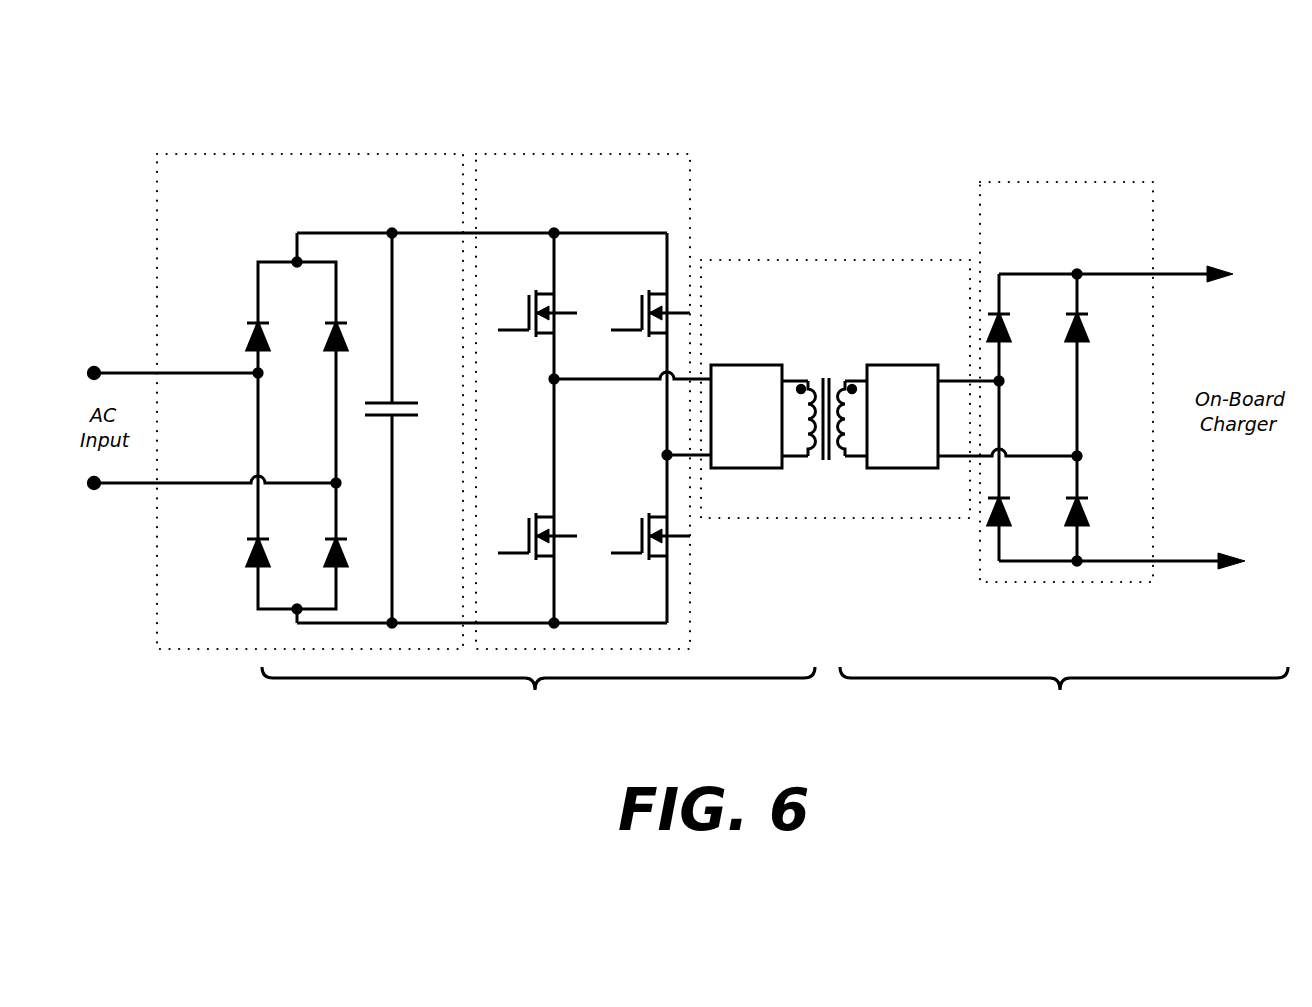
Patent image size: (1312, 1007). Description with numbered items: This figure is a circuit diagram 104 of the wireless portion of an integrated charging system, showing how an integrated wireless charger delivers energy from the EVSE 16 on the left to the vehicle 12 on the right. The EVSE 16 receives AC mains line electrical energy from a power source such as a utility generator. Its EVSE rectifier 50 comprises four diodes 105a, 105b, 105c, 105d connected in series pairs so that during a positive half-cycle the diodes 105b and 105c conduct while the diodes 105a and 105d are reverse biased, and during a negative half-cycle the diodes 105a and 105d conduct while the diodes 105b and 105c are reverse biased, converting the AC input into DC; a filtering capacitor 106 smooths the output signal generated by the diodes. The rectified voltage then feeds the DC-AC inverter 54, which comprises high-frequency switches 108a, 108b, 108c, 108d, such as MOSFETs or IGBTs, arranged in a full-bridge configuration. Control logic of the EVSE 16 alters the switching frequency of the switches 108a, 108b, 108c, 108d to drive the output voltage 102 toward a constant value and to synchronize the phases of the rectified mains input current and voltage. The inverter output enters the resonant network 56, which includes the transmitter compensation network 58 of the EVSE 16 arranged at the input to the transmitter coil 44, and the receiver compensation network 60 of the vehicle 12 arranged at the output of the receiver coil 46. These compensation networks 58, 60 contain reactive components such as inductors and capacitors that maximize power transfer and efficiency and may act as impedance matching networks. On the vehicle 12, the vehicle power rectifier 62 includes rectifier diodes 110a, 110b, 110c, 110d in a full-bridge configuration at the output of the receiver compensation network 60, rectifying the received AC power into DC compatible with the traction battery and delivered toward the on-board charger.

The circuit diagram 104 is at (982, 72).
The EVSE rectifier 50 is at (336, 152).
The DC-AC inverter 54 is at (596, 152).
The resonant network 56 is at (868, 258).
The vehicle power rectifier 62 is at (1083, 178).
The output voltage 102 is at (1178, 270).
The diode 105a is at (252, 318).
The diode 105b is at (252, 534).
The diode 105c is at (333, 318).
The diode 105d is at (333, 534).
The filtering capacitor 106 is at (400, 408).
The high-frequency switch 108a is at (537, 290).
The high-frequency switch 108b is at (537, 513).
The high-frequency switch 108c is at (649, 288).
The high-frequency switch 108d is at (648, 511).
The rectifier diode 110a is at (1002, 312).
The rectifier diode 110b is at (1002, 496).
The rectifier diode 110c is at (1080, 312).
The rectifier diode 110d is at (1080, 496).
The transmitter compensation network 58 is at (737, 362).
The receiver compensation network 60 is at (897, 362).
The transmitter coil 44 is at (795, 376).
The receiver coil 46 is at (860, 458).
The EVSE 16 is at (605, 678).
The vehicle 12 is at (1135, 678).